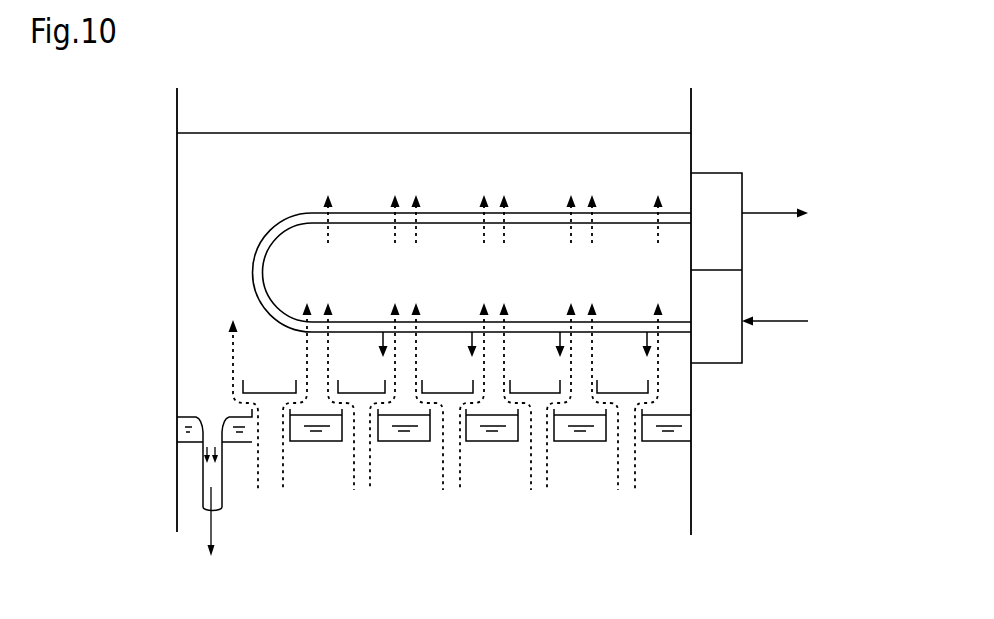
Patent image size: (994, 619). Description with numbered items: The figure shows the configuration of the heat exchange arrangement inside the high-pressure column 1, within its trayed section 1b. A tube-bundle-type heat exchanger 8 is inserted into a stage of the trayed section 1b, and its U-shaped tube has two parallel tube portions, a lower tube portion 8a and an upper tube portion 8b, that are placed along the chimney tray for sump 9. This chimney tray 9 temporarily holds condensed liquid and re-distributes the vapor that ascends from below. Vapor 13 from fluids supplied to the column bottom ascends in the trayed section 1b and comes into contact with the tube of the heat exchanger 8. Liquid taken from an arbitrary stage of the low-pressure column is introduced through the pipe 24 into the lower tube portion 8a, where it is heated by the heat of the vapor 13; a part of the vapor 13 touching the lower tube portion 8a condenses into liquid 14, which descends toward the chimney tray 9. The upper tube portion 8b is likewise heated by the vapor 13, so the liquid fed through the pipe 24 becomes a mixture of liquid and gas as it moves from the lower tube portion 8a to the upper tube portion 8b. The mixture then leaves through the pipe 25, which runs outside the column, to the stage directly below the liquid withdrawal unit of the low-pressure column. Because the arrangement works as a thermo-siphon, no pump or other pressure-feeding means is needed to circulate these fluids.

The high-pressure column 1 is at (168, 290).
The trayed section 1b is at (450, 122).
The tube-bundle-type heat exchanger 8 is at (718, 335).
The lower tube portion 8a is at (632, 322).
The upper tube portion 8b is at (632, 213).
The chimney tray for sump 9 is at (178, 446).
The vapor 13 is at (505, 228).
The liquid 14 is at (383, 340).
The pipe 24 is at (773, 322).
The pipe 25 is at (772, 214).